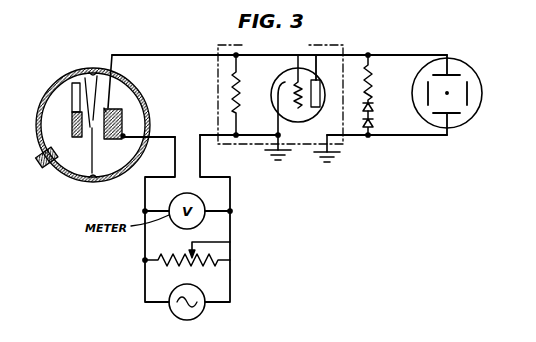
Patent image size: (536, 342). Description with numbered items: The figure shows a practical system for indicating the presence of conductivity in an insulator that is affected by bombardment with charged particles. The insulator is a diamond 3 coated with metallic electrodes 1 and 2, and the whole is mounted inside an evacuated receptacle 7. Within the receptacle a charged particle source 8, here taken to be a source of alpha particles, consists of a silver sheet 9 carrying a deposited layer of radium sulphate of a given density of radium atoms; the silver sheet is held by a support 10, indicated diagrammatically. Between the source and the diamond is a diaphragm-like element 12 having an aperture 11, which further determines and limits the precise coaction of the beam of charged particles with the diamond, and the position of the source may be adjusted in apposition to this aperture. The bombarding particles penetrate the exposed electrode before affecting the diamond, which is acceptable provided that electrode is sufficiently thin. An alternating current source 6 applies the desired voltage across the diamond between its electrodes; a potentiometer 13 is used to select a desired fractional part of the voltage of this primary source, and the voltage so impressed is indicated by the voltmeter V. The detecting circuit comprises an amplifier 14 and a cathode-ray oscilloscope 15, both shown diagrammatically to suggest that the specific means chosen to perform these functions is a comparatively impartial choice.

The metallic electrode 1 is at (123, 121).
The metallic electrode 2 is at (103, 138).
The diamond 3 is at (112, 109).
The alternating current source 6 is at (200, 313).
The evacuated receptacle 7 is at (44, 97).
The charged particle source 8 is at (72, 127).
The silver sheet 9 is at (50, 170).
The support 10 is at (72, 103).
The aperture 11 is at (85, 78).
The diaphragm-like element 12 is at (104, 108).
The potentiometer 13 is at (197, 243).
The amplifier 14 is at (338, 50).
The cathode-ray oscilloscope 15 is at (468, 67).